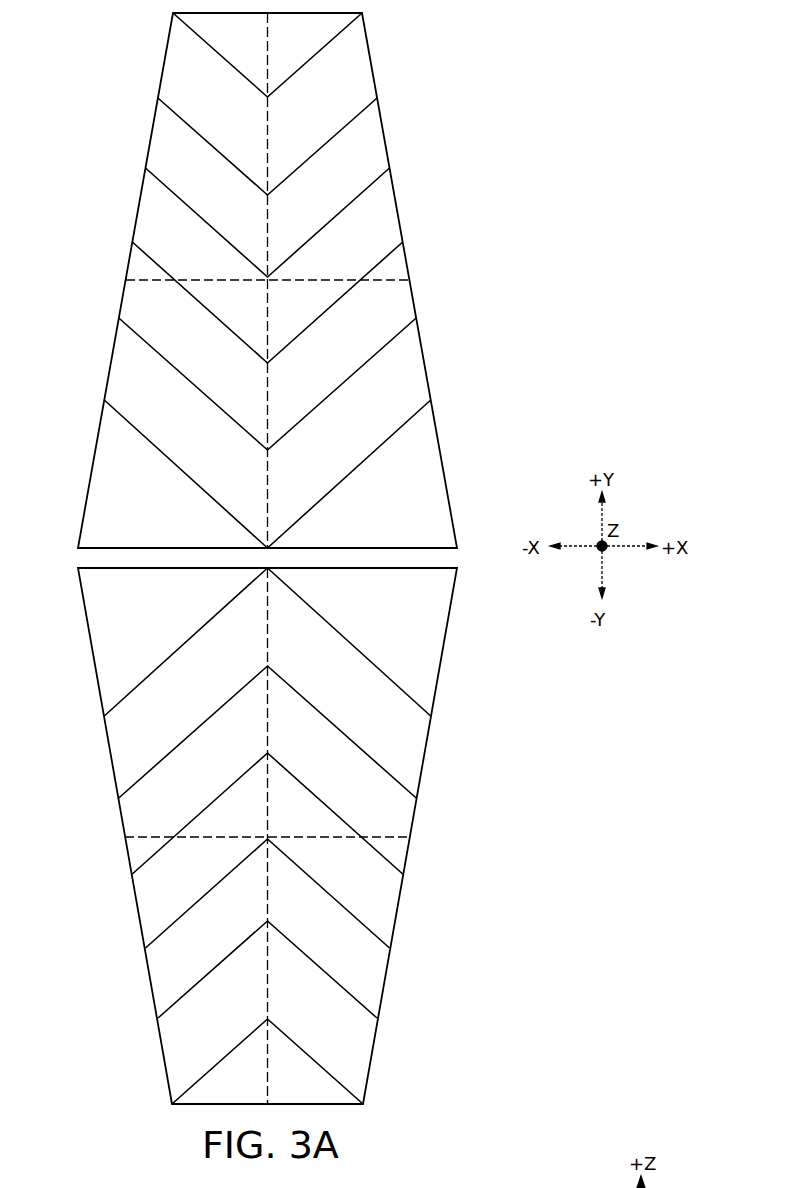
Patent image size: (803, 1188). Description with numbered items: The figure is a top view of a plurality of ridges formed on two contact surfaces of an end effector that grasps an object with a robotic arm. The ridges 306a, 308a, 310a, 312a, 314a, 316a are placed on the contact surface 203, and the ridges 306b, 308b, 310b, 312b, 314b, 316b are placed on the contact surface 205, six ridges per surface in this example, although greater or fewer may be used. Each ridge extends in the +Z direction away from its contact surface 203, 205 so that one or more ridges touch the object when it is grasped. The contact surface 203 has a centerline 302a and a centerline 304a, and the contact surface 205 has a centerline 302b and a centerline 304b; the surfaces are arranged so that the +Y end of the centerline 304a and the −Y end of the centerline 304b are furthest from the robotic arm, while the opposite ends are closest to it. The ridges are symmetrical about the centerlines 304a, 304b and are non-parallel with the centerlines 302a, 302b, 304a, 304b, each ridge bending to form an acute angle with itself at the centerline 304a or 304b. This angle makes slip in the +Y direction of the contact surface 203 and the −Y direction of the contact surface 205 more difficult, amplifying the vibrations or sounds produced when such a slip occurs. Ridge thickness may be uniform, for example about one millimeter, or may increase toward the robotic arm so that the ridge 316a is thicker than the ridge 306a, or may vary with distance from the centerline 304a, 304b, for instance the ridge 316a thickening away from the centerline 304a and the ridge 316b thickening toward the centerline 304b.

The contact surface 203 is at (186, 20).
The contact surface 205 is at (188, 1098).
The centerline 302a is at (126, 279).
The centerline 302b is at (140, 836).
The centerline 304a is at (297, 387).
The centerline 304b is at (270, 695).
The ridge 306a is at (348, 26).
The ridge 308a is at (366, 108).
The ridge 310a is at (378, 178).
The ridge 312a is at (394, 250).
The ridge 314a is at (404, 329).
The ridge 316a is at (416, 414).
The ridge 306b is at (348, 1090).
The ridge 308b is at (366, 1008).
The ridge 310b is at (378, 939).
The ridge 312b is at (394, 866).
The ridge 314b is at (404, 787).
The ridge 316b is at (416, 702).